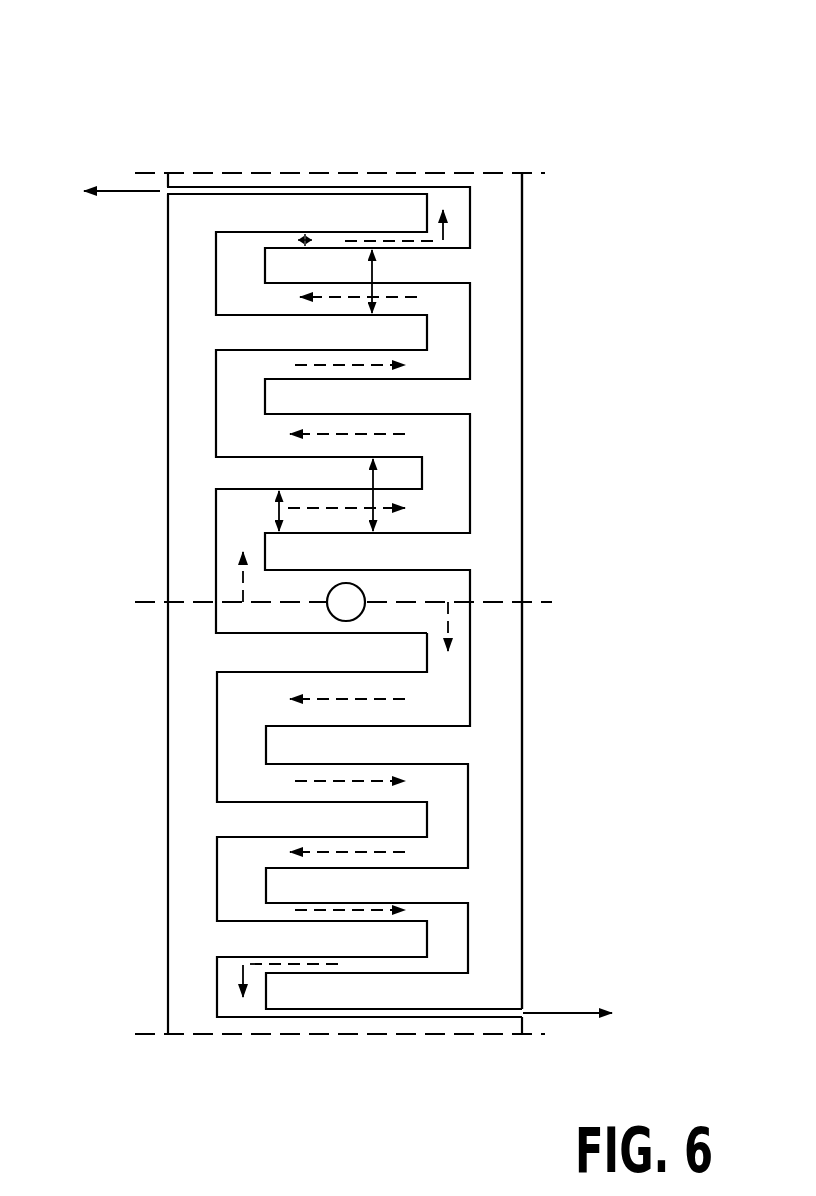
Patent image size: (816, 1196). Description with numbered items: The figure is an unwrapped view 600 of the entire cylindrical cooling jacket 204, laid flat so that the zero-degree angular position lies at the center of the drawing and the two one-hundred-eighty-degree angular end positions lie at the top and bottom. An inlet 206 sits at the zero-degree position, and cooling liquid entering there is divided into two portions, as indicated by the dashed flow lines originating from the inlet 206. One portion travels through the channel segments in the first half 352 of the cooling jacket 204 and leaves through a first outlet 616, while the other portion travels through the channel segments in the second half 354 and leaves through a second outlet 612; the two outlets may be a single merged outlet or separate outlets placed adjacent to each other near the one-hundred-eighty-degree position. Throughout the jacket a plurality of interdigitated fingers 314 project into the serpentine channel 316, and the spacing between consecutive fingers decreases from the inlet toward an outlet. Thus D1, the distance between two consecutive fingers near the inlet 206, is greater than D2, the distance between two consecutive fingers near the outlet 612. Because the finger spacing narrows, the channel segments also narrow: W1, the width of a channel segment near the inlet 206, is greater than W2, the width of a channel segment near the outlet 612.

The unwrapped view 600 is at (602, 58).
The cooling jacket 204 is at (580, 273).
The inlet 206 is at (355, 592).
The interdigitated fingers 314 is at (210, 471).
The serpentine channel 316 is at (201, 758).
The first half 352 is at (562, 722).
The second half 354 is at (541, 446).
The second outlet 612 is at (180, 196).
The first outlet 616 is at (495, 1008).
The width of channel segment proximal to inlet W1 is at (260, 511).
The width of channel segment proximal to outlet W2 is at (306, 235).
The distance between consecutive fingers proximal to inlet D1 is at (392, 495).
The distance between consecutive fingers proximal to outlet D2 is at (390, 281).